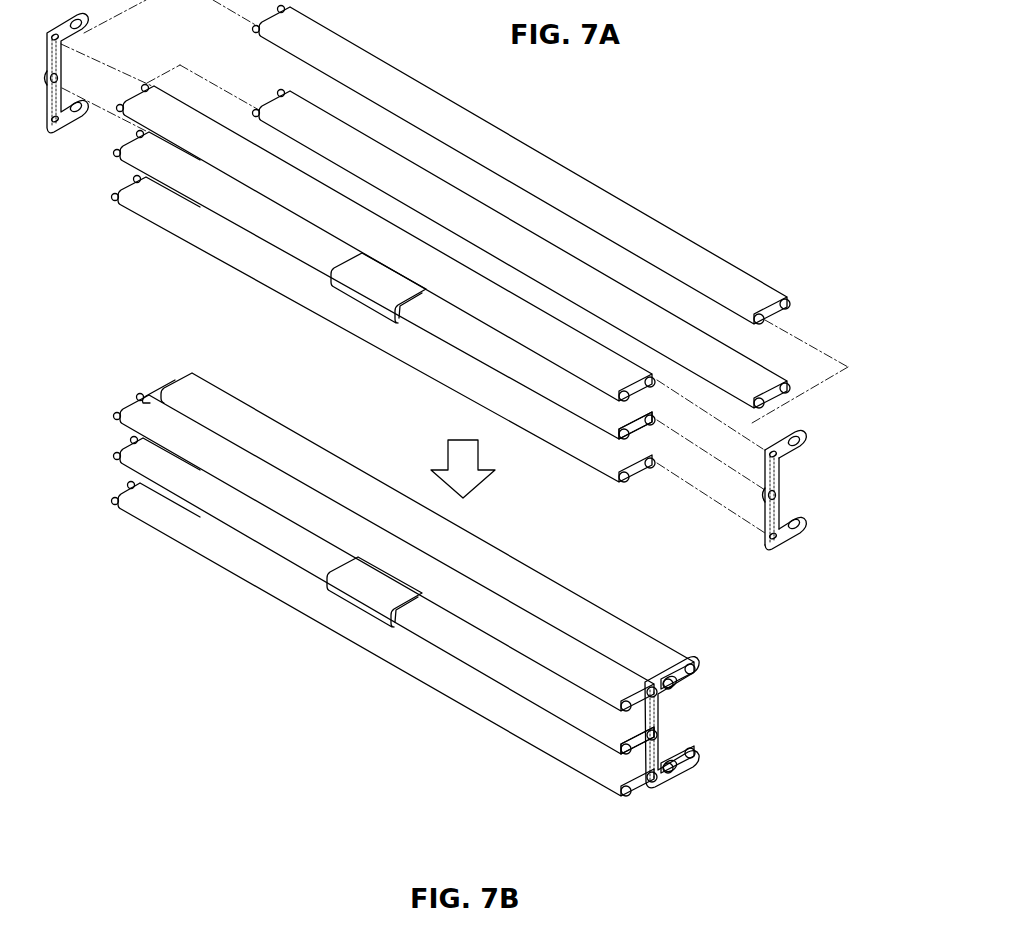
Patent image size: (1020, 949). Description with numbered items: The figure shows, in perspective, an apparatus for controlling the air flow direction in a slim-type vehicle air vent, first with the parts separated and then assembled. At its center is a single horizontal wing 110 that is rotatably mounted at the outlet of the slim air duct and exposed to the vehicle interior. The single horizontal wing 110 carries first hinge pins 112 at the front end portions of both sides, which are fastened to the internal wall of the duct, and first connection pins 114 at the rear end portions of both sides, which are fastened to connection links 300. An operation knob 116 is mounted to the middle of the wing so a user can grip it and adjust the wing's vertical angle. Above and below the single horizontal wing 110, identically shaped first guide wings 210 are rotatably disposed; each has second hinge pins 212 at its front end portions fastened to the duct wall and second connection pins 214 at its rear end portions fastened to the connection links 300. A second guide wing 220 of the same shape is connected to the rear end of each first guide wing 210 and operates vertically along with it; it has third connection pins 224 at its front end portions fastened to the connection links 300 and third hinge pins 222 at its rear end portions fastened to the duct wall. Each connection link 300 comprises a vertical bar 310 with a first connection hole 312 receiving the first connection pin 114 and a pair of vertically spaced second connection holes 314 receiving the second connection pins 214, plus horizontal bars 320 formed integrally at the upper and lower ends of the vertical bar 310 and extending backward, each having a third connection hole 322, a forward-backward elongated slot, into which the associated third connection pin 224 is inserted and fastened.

In FIG. 7A, the single horizontal wing 110 is at (205, 192).
In FIG. 7A, the first hinge pin 112 is at (616, 438).
In FIG. 7B, the first hinge pin 112 is at (620, 751).
In FIG. 7A, the first connection pin 114 is at (656, 426).
In FIG. 7B, the first connection pin 114 is at (660, 723).
In FIG. 7A, the operation knob 116 is at (362, 296).
In FIG. 7A, the first guide wing 210 is at (265, 198).
In FIG. 7A, the second hinge pin 212 is at (618, 397).
In FIG. 7B, the second hinge pin 212 is at (620, 708).
In FIG. 7A, the second connection pin 214 is at (655, 383).
In FIG. 7B, the second connection pin 214 is at (651, 686).
In FIG. 7B, the second guide wing 220 is at (702, 728).
In FIG. 7A, the third hinge pin 222 is at (790, 303).
In FIG. 7B, the third hinge pin 222 is at (695, 667).
In FIG. 7A, the third connection pin 224 is at (765, 319).
In FIG. 7B, the third connection pin 224 is at (676, 684).
In FIG. 7A, the connection link 300 is at (803, 510).
In FIG. 7B, the connection link 300 is at (652, 792).
In FIG. 7A, the vertical bar 310 is at (782, 520).
In FIG. 7A, the first connection hole 312 is at (811, 497).
In FIG. 7A, the second connection hole 314 is at (776, 455).
In FIG. 7A, the horizontal bar 320 is at (790, 452).
In FIG. 7A, the third connection hole 322 is at (801, 437).